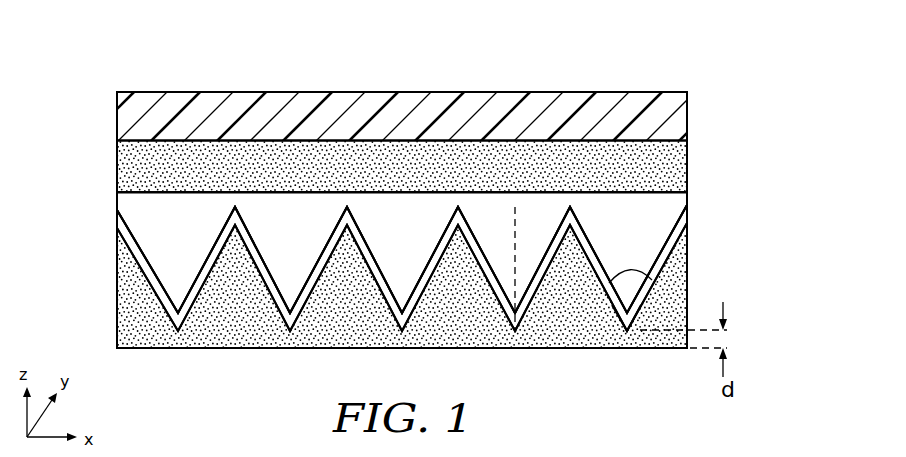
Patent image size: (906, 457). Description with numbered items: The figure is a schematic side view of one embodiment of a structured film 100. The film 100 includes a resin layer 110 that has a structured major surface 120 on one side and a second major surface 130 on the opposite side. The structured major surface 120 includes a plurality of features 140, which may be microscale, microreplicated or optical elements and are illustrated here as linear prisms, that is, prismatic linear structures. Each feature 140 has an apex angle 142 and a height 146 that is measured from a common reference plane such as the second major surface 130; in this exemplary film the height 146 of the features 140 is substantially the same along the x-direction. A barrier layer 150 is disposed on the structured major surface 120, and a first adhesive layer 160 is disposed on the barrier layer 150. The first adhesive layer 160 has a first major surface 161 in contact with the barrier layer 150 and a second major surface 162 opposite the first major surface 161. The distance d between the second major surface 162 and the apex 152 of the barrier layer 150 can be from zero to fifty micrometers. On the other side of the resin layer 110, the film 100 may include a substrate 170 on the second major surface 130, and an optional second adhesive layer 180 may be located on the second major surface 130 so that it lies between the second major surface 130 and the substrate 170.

The film 100 is at (662, 31).
The resin layer 110 is at (652, 208).
The structured major surface 120 is at (668, 239).
The second major surface 130 is at (141, 193).
The features 140 is at (608, 253).
The apex angle 142 is at (629, 283).
The height 146 is at (515, 223).
The barrier layer 150 is at (132, 243).
The apex 152 is at (626, 333).
The first adhesive layer 160 is at (130, 325).
The first major surface 161 is at (140, 286).
The second major surface 162 is at (672, 348).
The substrate 170 is at (127, 115).
The second adhesive layer 180 is at (127, 155).